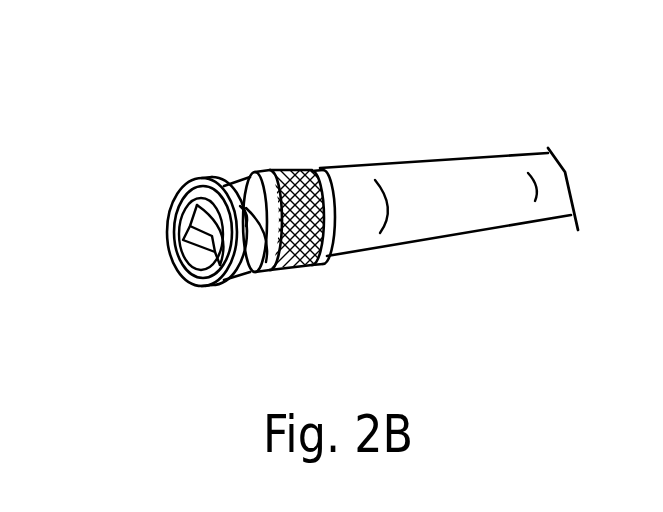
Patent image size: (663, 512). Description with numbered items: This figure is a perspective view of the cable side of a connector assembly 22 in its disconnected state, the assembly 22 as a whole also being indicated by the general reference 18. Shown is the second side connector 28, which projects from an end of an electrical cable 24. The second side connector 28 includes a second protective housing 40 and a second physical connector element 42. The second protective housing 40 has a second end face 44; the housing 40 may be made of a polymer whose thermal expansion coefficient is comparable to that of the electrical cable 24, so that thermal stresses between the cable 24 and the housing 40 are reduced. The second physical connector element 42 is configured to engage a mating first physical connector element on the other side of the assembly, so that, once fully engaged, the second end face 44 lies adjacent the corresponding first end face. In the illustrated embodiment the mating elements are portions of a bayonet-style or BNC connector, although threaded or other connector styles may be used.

The connector assembly 18 is at (122, 143).
The connector assembly 22 is at (248, 173).
The electrical cable 24 is at (434, 158).
The second side connector 28 is at (188, 193).
The second protective housing 40 is at (256, 262).
The second physical connector element 42 is at (217, 283).
The second end face 44 is at (297, 258).